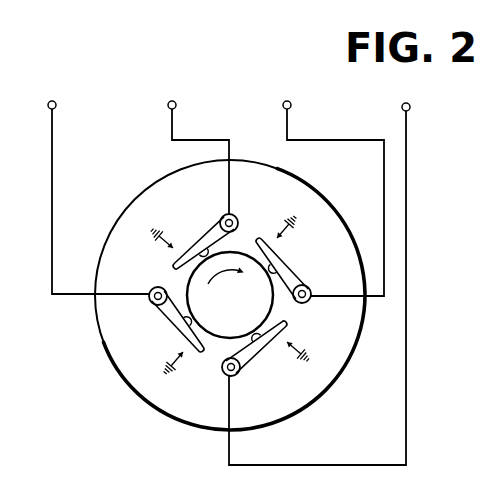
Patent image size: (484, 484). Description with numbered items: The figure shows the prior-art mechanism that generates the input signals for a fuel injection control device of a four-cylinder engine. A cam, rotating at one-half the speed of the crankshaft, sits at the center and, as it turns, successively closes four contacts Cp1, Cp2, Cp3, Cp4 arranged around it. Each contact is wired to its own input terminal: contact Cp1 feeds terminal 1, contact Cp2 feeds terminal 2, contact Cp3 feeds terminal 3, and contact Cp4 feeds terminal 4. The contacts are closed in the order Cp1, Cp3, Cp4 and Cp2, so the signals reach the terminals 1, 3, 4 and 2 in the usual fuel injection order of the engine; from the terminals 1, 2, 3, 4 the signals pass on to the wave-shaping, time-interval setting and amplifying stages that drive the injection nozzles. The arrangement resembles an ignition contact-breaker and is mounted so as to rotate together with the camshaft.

The terminal 1 is at (97, 185).
The terminal 2 is at (321, 270).
The terminal 3 is at (197, 145).
The terminal 4 is at (332, 186).
The contact Cp1 is at (172, 330).
The contact Cp2 is at (273, 344).
The contact Cp3 is at (184, 245).
The contact Cp4 is at (275, 252).